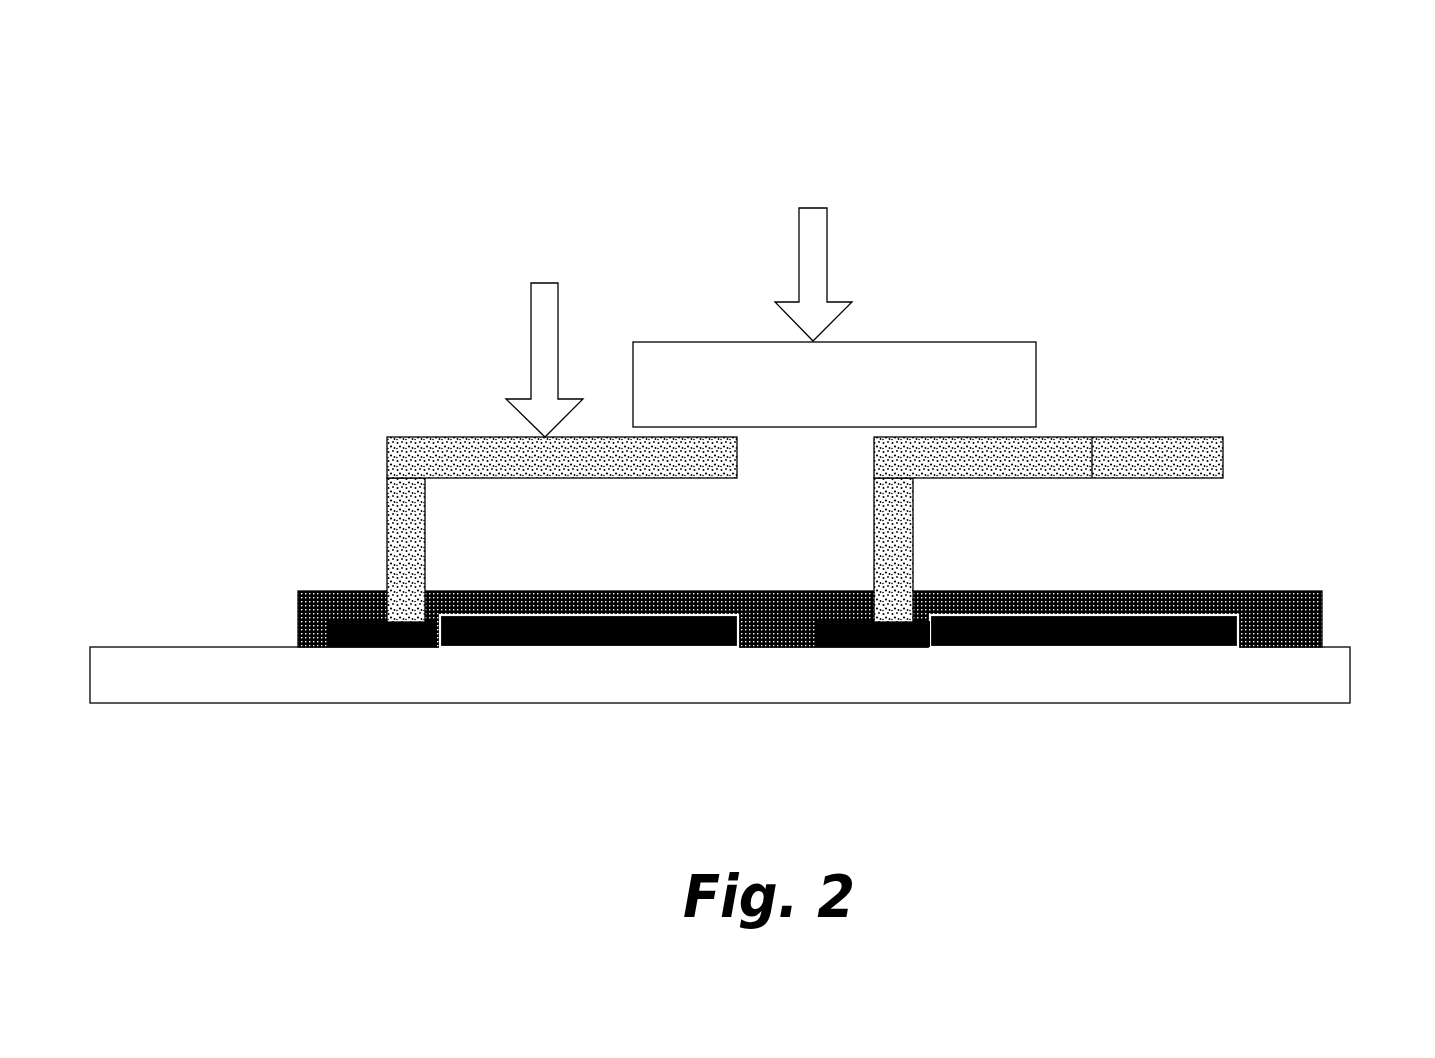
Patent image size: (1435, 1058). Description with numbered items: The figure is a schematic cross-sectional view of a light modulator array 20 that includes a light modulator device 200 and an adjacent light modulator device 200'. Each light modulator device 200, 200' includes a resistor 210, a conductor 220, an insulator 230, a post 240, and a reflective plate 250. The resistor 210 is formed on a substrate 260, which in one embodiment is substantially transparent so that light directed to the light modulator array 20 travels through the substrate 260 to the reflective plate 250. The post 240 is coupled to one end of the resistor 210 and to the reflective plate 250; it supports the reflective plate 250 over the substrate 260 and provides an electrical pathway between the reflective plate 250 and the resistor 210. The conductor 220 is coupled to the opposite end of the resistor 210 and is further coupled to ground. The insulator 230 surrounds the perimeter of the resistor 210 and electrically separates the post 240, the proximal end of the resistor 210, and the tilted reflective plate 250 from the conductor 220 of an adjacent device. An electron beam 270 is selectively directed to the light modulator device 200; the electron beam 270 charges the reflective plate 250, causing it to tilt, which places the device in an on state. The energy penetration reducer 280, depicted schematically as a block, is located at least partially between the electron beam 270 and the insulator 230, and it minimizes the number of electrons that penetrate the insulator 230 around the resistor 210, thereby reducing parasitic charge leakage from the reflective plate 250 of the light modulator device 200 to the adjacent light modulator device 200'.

The light modulator array 20 is at (852, 87).
The light modulator device 200 is at (1125, 226).
The adjacent light modulator device 200' is at (609, 177).
The resistor 210 is at (402, 647).
The conductor 220 is at (643, 647).
The insulator 230 is at (310, 647).
The post 240 is at (387, 520).
The reflective plate 250 is at (467, 437).
The substrate 260 is at (1345, 689).
The electron beam 270 is at (558, 338).
The energy penetration reducer 280 is at (834, 384).